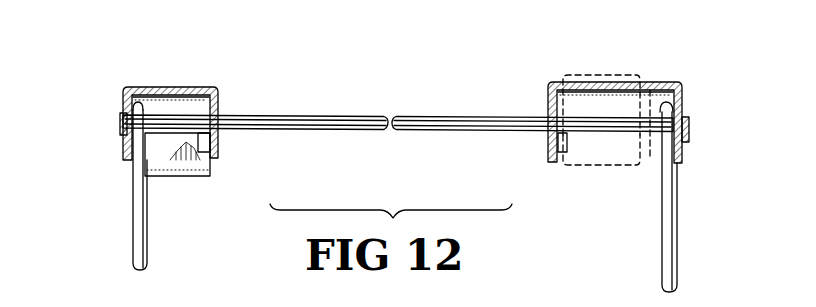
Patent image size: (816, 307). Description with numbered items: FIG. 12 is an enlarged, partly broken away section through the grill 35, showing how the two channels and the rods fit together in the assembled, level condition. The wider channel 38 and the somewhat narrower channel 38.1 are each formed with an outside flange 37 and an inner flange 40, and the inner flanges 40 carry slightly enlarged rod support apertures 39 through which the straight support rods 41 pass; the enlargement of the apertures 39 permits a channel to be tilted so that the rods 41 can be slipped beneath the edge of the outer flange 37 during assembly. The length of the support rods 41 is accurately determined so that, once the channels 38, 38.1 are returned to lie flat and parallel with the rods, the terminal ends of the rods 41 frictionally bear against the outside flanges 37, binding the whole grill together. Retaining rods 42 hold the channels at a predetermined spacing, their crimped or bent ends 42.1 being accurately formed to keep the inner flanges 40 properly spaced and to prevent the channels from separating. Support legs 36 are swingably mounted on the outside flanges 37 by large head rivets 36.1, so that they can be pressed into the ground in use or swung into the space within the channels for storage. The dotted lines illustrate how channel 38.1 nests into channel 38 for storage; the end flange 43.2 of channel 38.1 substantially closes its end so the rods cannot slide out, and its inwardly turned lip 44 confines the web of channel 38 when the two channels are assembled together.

The grill 35 is at (705, 101).
The support legs 36 is at (133, 236).
The large head rivets 36.1 is at (121, 119).
The outside flange 37 is at (122, 140).
The channel 38 is at (669, 82).
The channel 38.1 is at (146, 87).
The rod support apertures 39 is at (218, 114).
The inner flange 40 is at (218, 145).
The support rods 41 is at (350, 131).
The retaining rods 42 is at (570, 139).
The crimp or bent ends 42.1 is at (210, 150).
The end flange 43.2 is at (177, 103).
The inwardly turned lip 44 is at (176, 176).